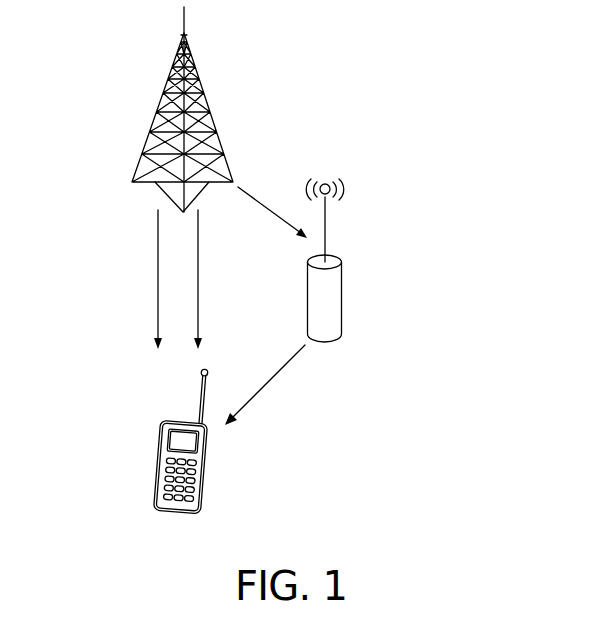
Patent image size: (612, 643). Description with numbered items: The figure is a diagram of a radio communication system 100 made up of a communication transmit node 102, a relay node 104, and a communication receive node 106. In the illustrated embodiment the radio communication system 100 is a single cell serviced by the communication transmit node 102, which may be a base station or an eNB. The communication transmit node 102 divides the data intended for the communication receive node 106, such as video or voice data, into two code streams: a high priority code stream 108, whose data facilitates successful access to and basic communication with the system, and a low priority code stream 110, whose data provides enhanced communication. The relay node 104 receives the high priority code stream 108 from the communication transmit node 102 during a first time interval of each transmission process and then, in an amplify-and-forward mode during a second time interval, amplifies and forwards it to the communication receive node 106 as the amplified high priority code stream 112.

The radio communication system 100 is at (402, 82).
The communication transmit node 102 is at (159, 108).
The relay node 104 is at (342, 293).
The communication receive node 106 is at (207, 466).
The high priority code stream 108 is at (157, 273).
The low priority code stream 110 is at (199, 280).
The amplified high priority code stream 112 is at (272, 379).